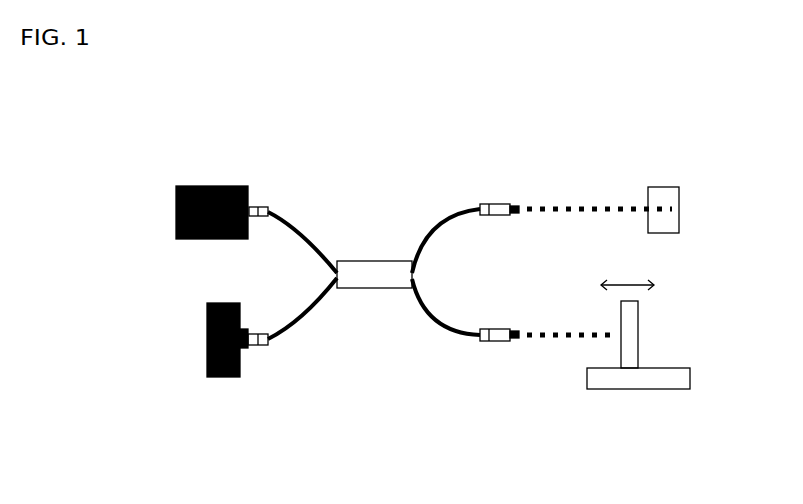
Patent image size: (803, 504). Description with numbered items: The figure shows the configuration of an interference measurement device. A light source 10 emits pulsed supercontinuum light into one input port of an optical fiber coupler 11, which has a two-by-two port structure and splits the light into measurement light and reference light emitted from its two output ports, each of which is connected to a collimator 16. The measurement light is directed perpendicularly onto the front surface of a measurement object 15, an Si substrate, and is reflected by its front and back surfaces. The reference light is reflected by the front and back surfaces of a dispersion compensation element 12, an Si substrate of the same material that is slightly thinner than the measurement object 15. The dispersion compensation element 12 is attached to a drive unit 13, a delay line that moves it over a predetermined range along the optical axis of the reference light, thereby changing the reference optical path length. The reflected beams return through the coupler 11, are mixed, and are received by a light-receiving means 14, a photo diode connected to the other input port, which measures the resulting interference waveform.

The light source 10 is at (209, 185).
The optical fiber coupler 11 is at (375, 260).
The dispersion compensation element 12 is at (634, 330).
The drive unit 13 is at (610, 385).
The light-receiving means 14 is at (213, 377).
The measurement object 15 is at (657, 187).
The collimator 16 is at (493, 205).